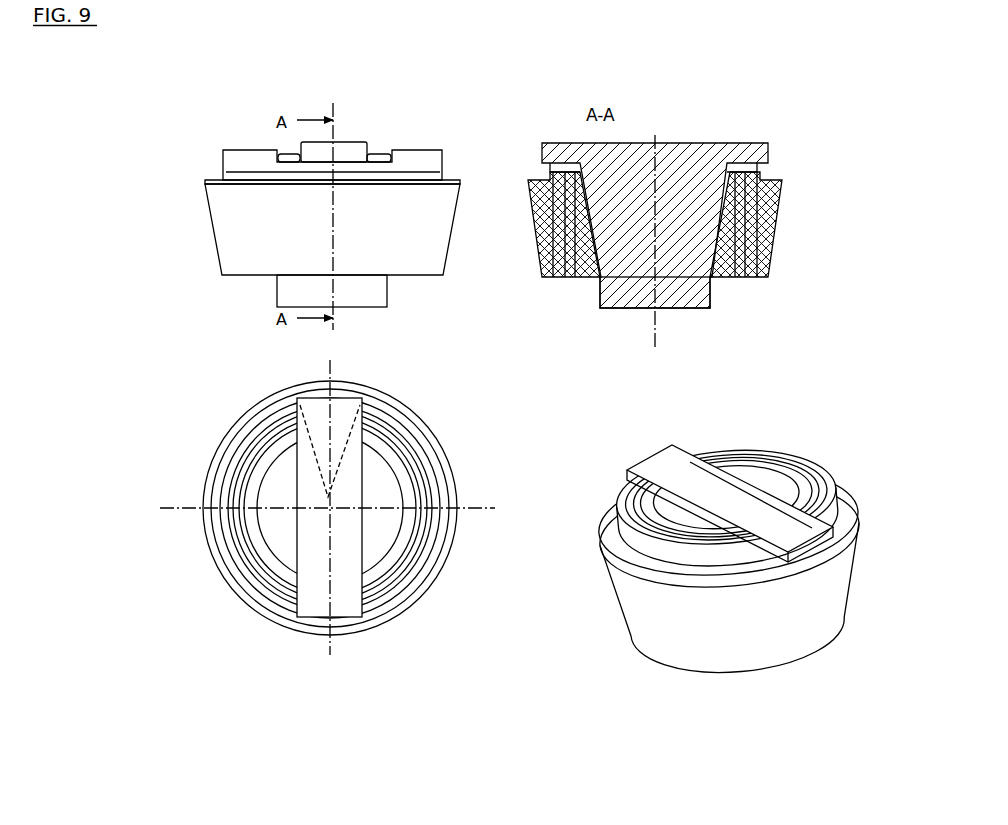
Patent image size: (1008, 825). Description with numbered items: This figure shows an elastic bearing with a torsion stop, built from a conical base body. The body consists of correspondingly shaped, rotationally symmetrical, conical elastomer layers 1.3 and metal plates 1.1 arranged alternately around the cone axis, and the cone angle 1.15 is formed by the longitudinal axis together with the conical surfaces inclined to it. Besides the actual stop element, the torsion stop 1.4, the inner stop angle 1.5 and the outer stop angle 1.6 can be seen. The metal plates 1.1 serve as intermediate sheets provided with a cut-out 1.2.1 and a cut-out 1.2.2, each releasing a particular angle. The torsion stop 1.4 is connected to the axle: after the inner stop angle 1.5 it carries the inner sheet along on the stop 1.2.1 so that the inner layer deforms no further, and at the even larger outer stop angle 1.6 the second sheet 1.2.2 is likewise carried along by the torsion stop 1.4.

The metal plates 1.1 is at (856, 518).
The conical elastomer layers 1.3 is at (753, 183).
The cone angle 1.15 is at (605, 308).
The torsion stop 1.4 is at (325, 413).
The inner stop angle 1.5 is at (290, 400).
The outer stop angle 1.6 is at (402, 390).
The cut-out of the second sheet 1.2.2 is at (382, 418).
The cut-out of the inner sheet 1.2.1 is at (375, 428).